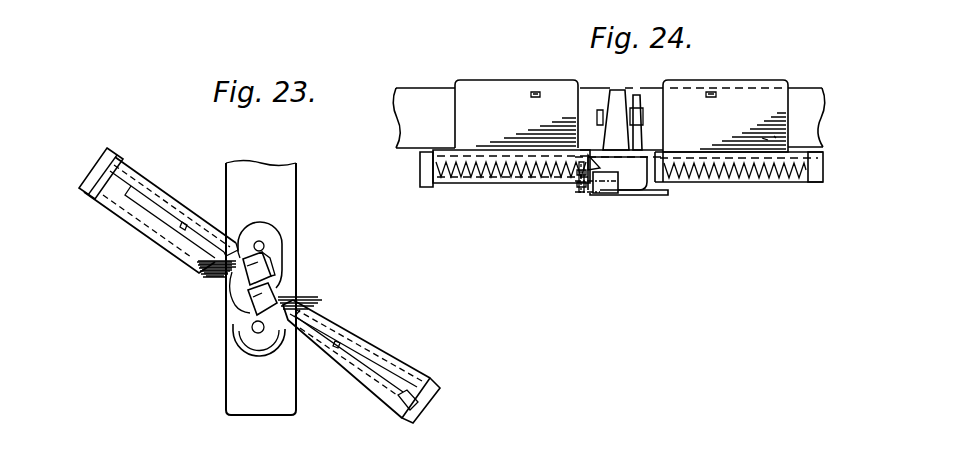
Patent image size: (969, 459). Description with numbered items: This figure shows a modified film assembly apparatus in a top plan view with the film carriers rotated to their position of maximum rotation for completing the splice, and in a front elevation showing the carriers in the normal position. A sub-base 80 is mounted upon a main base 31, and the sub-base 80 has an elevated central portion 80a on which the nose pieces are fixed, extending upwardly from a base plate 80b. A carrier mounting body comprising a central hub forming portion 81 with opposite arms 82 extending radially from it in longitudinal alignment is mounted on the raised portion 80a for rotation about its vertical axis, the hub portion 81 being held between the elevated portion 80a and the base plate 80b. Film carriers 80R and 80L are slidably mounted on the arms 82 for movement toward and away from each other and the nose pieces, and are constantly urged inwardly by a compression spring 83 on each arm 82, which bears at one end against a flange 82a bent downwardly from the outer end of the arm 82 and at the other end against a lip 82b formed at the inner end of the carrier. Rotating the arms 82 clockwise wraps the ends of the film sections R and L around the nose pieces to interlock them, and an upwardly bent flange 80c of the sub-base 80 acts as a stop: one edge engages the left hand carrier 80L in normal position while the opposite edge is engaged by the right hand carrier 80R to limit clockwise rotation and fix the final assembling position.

In FIG. 23, the main base 31 is at (273, 404).
In FIG. 23, the sub-base 80 is at (270, 245).
In FIG. 24, the sub-base 80 is at (626, 196).
In FIG. 23, the left hand film carrier 80L is at (132, 212).
In FIG. 24, the left hand film carrier 80L is at (498, 97).
In FIG. 23, the right hand film carrier 80R is at (366, 358).
In FIG. 24, the right hand film carrier 80R is at (768, 80).
In FIG. 24, the elevated central portion 80a is at (665, 190).
In FIG. 23, the base plate 80b is at (286, 283).
In FIG. 23, the upwardly bent flange 80c is at (260, 348).
In FIG. 24, the upwardly bent flange 80c is at (613, 180).
In FIG. 23, the central hub forming portion 81 is at (284, 268).
In FIG. 24, the central hub forming portion 81 is at (578, 192).
In FIG. 23, the film carrier mounting arms 82 is at (108, 157).
In FIG. 24, the film carrier mounting arms 82 is at (428, 152).
In FIG. 24, the flange 82a is at (420, 178).
In FIG. 24, the lip 82b is at (563, 173).
In FIG. 24, the compression spring 83 is at (428, 186).
In FIG. 23, the left film section L is at (92, 170).
In FIG. 24, the left film section L is at (427, 97).
In FIG. 23, the right film section R is at (452, 414).
In FIG. 24, the right film section R is at (803, 95).